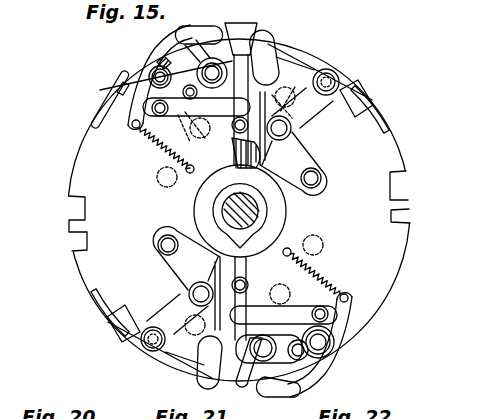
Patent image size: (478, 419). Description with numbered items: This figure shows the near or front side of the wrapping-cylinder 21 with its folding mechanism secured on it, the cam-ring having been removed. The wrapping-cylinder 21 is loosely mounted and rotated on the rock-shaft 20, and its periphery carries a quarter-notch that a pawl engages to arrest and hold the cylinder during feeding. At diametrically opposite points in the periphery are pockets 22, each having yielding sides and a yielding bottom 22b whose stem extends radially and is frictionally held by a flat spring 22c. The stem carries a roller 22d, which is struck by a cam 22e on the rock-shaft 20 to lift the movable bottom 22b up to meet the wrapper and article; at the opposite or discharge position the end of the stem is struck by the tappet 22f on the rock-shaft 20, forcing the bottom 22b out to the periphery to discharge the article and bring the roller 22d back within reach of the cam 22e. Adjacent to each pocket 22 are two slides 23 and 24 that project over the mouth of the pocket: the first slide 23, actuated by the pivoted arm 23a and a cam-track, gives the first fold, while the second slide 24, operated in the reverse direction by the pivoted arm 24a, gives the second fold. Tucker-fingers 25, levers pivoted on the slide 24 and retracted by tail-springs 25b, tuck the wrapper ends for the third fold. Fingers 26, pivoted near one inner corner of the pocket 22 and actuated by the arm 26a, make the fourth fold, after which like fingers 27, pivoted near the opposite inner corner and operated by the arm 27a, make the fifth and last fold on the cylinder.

The rock-shaft 20 is at (222, 206).
The wrapping-cylinder 21 is at (38, 224).
The pocket 22 is at (258, 34).
The yielding bottom 22b is at (256, 19).
The flat spring 22c is at (240, 211).
The roller 22d is at (279, 285).
The cam 22e is at (238, 164).
The tappet 22f is at (278, 203).
The slide 23 is at (305, 51).
The pivoted arm 23a is at (300, 113).
The slide 24 is at (143, 73).
The pivoted arm 24a is at (137, 130).
The tucker-finger 25 is at (177, 47).
The tail-spring 25b is at (340, 274).
The finger 26 is at (323, 58).
The arm 26a is at (255, 197).
The finger 27 is at (240, 392).
The arm 27a is at (185, 72).